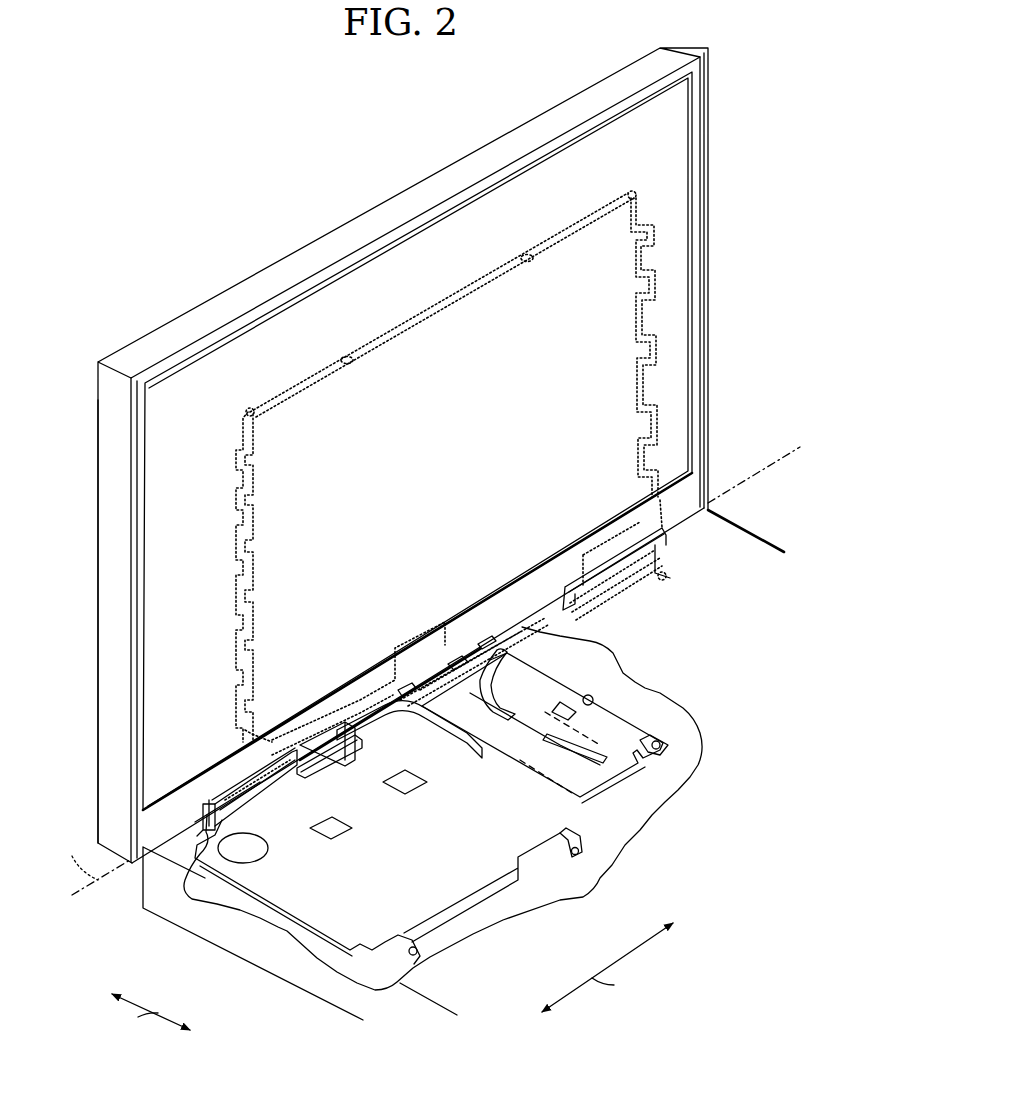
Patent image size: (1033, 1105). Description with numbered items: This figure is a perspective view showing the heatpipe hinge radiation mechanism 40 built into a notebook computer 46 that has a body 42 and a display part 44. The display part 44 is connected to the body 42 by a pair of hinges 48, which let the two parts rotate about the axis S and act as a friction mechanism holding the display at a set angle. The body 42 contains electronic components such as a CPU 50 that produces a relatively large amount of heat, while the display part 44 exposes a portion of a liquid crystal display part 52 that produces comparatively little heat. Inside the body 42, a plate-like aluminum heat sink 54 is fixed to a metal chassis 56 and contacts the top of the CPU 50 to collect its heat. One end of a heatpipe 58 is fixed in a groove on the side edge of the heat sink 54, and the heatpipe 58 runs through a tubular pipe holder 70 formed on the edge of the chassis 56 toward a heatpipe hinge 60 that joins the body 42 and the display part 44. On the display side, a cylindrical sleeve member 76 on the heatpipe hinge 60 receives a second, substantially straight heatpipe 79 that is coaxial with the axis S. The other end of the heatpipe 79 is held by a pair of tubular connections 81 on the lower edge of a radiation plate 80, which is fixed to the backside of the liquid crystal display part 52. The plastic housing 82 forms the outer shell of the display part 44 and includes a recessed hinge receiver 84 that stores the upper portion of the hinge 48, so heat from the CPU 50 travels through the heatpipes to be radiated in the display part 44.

The heatpipe hinge radiation mechanism 40 is at (472, 556).
The body 42 is at (236, 958).
The display part 44 is at (100, 352).
The notebook computer 46 is at (724, 47).
The hinges 48 is at (666, 548).
The CPU 50 is at (612, 717).
The liquid crystal display part (LCD) 52 is at (680, 102).
The heat sink 54 is at (543, 668).
The chassis 56 is at (412, 897).
The heatpipe 58 is at (340, 766).
The heatpipe hinge 60 is at (276, 790).
The pipe holder 70 is at (374, 734).
The sleeve member 76 is at (396, 677).
The heatpipe 79 is at (452, 664).
The radiation plate 80 is at (636, 345).
The connections 81 is at (404, 690).
The housing 82 is at (98, 680).
The hinge receiver 84 is at (195, 822).